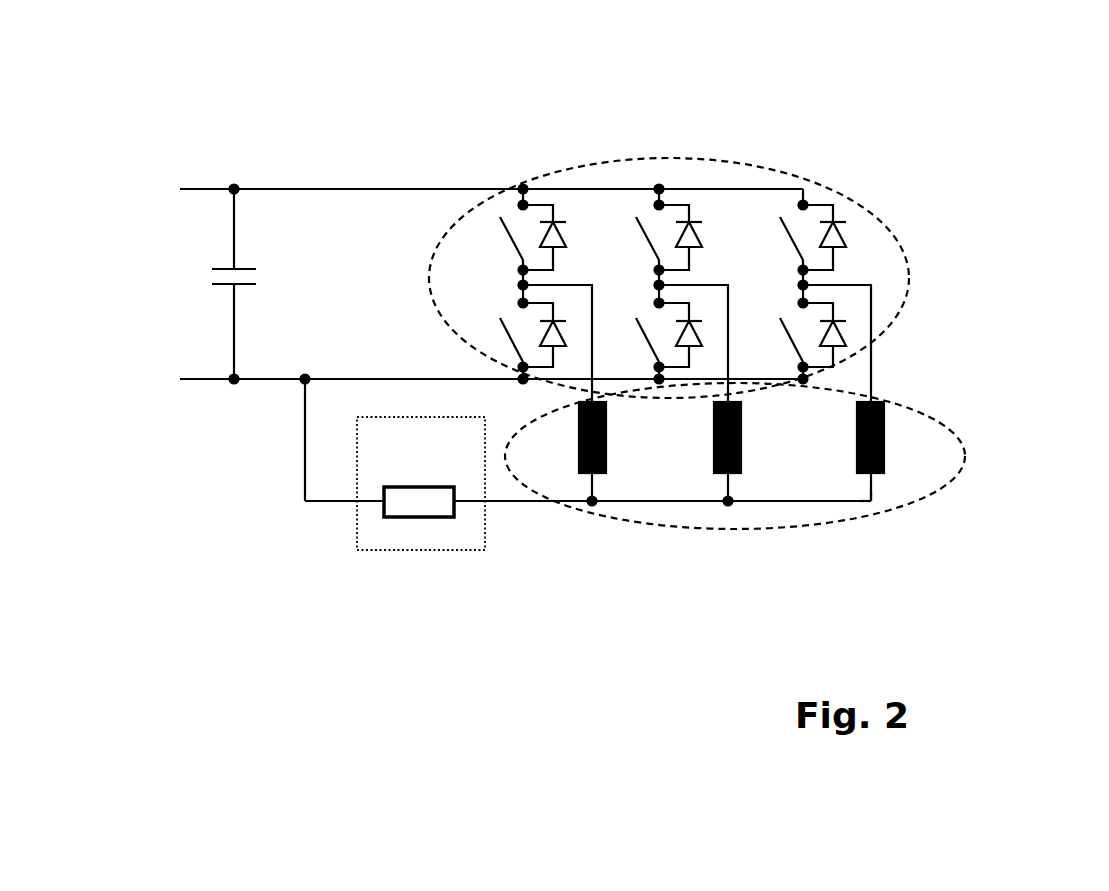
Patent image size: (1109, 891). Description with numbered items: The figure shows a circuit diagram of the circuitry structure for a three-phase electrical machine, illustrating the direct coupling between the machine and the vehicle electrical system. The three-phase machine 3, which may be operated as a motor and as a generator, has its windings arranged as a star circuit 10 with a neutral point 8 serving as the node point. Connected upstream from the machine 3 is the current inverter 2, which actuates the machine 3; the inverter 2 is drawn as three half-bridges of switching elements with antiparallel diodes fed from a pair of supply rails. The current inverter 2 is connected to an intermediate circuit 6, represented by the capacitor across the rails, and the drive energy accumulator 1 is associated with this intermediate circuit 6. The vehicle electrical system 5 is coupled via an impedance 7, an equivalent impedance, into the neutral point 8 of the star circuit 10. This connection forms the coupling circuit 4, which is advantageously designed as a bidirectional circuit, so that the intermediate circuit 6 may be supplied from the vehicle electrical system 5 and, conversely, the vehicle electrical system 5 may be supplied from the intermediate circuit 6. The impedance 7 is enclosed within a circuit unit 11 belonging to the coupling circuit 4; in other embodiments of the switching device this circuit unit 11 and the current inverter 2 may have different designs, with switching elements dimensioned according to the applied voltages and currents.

The drive energy accumulator 1 is at (140, 313).
The current inverter 2 is at (612, 160).
The three-phase machine 3 is at (792, 522).
The coupling circuit 4 is at (286, 470).
The vehicle electrical system 5 is at (313, 543).
The intermediate circuit 6 is at (187, 264).
The impedance 7 is at (420, 513).
The neutral point 8 is at (580, 519).
The star circuit 10 is at (870, 490).
The circuit unit 11 is at (390, 552).